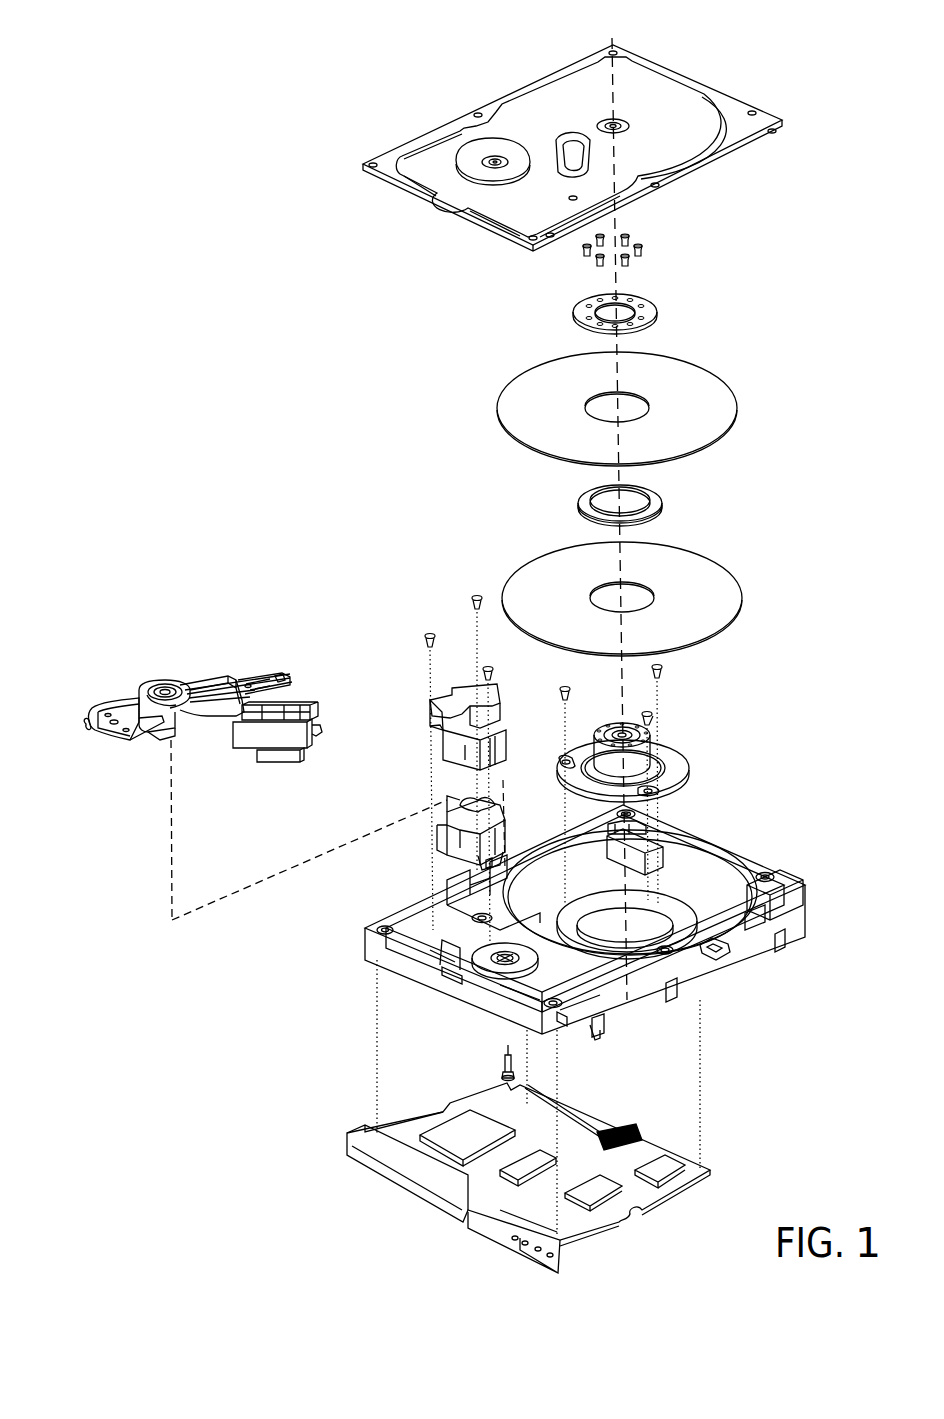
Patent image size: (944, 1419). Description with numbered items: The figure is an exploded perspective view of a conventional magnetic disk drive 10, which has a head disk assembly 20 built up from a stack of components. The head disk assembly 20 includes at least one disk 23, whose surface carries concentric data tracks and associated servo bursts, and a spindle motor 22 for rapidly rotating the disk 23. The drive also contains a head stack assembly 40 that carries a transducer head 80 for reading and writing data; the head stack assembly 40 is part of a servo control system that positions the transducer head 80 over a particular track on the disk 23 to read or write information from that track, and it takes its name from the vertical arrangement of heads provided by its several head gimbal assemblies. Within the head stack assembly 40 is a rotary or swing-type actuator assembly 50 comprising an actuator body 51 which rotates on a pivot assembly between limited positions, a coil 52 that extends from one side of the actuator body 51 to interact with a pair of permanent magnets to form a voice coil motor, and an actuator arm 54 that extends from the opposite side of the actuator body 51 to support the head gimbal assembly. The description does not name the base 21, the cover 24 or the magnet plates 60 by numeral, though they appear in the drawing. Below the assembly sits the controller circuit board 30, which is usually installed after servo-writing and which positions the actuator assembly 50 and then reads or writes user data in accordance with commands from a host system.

The disk drive 10 is at (237, 172).
The head disk assembly 20 is at (818, 5).
The base 21 is at (795, 882).
The spindle motor 22 is at (678, 760).
The disk 23 is at (719, 383).
The cover 24 is at (745, 100).
The controller circuit board 30 is at (602, 1232).
The head stack assembly 40 is at (487, 590).
The actuator assembly 50 is at (163, 650).
The actuator body 51 is at (165, 686).
The coil 52 is at (96, 710).
The actuator arm 54 is at (196, 680).
The voice coil motor magnet plates 60 is at (443, 820).
The transducer head 80 is at (270, 672).